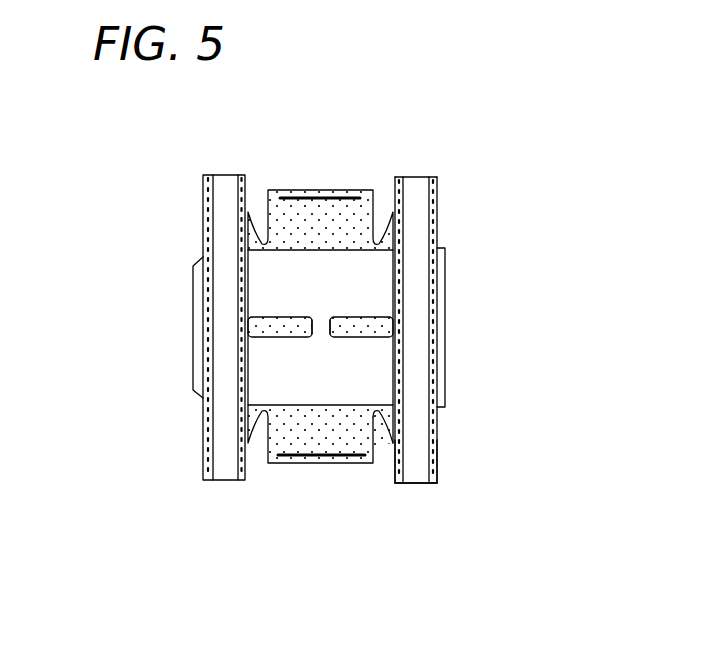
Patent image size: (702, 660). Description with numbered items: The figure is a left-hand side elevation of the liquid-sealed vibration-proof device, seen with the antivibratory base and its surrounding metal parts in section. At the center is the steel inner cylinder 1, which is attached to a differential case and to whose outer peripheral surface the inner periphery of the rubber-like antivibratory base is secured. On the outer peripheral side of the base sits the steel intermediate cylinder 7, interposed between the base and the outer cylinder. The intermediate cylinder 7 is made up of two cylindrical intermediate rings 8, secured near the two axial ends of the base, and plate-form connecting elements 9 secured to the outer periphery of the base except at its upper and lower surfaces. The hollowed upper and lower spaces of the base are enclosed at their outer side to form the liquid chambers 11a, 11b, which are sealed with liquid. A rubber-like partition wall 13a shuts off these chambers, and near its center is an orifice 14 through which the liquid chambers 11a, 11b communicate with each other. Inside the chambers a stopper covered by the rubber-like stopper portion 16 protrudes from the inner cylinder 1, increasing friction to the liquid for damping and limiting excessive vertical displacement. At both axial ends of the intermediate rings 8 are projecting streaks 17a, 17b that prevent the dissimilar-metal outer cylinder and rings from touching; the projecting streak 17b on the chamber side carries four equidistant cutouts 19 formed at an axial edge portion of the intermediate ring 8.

The inner cylinder 1 is at (443, 312).
The intermediate cylinder 7 is at (412, 499).
The intermediate ring 8 is at (420, 260).
The connecting element 9 is at (370, 373).
The liquid chamber 11a is at (258, 193).
The liquid chamber 11b is at (253, 465).
The partition wall 13a is at (353, 328).
The orifice 14 is at (318, 328).
The stopper portion 16 is at (305, 462).
The projecting streak 17a is at (437, 196).
The projecting streak 17b is at (402, 177).
The cutout 19 is at (393, 439).